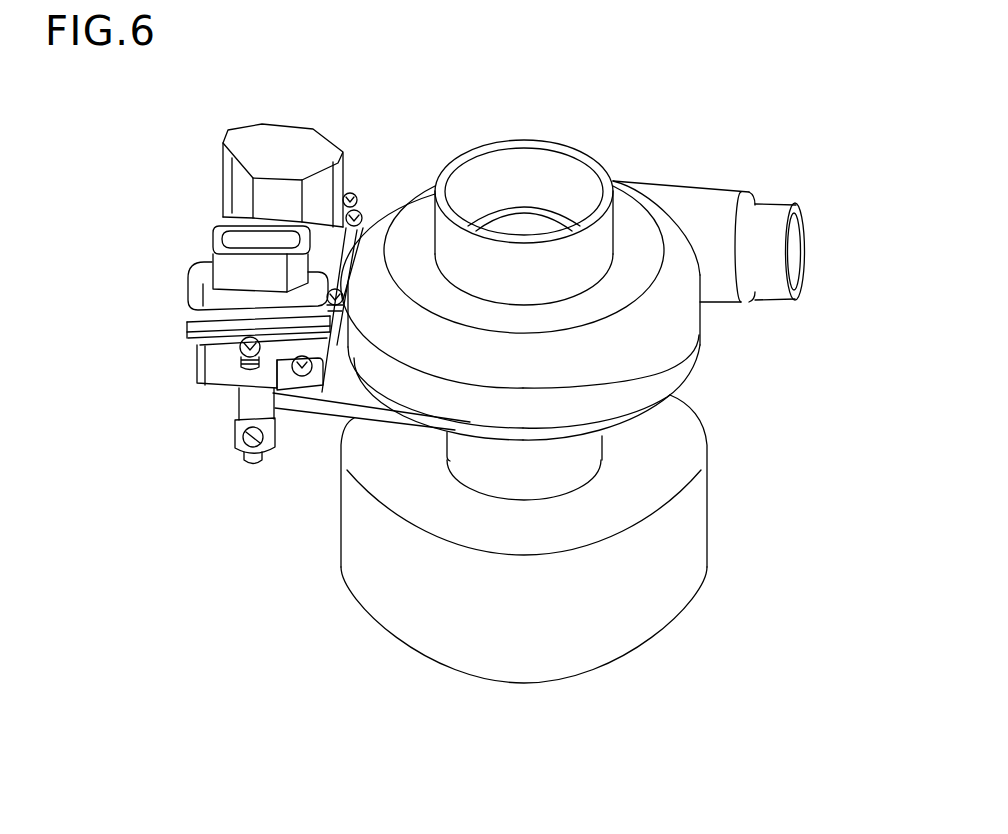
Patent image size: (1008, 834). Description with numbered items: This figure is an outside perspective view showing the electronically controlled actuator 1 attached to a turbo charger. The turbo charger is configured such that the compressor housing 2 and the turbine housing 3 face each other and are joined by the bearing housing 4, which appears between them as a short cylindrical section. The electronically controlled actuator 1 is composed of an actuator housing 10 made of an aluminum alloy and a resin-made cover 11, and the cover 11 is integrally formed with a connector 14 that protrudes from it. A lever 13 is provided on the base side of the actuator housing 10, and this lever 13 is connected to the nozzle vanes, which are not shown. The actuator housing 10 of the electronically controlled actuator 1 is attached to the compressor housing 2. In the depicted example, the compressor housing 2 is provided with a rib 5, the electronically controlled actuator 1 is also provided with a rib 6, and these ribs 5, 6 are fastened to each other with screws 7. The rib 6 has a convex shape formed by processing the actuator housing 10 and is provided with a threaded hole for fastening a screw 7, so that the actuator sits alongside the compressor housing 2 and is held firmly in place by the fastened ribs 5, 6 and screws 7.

The electronically controlled actuator 1 is at (292, 103).
The compressor housing 2 is at (690, 331).
The turbine housing 3 is at (660, 624).
The bearing housing 4 is at (577, 453).
The rib 5 is at (330, 388).
The rib 6 is at (285, 378).
The screws 7 is at (357, 202).
The actuator housing 10 is at (197, 368).
The cover 11 is at (258, 132).
The lever 13 is at (240, 436).
The connector 14 is at (228, 276).